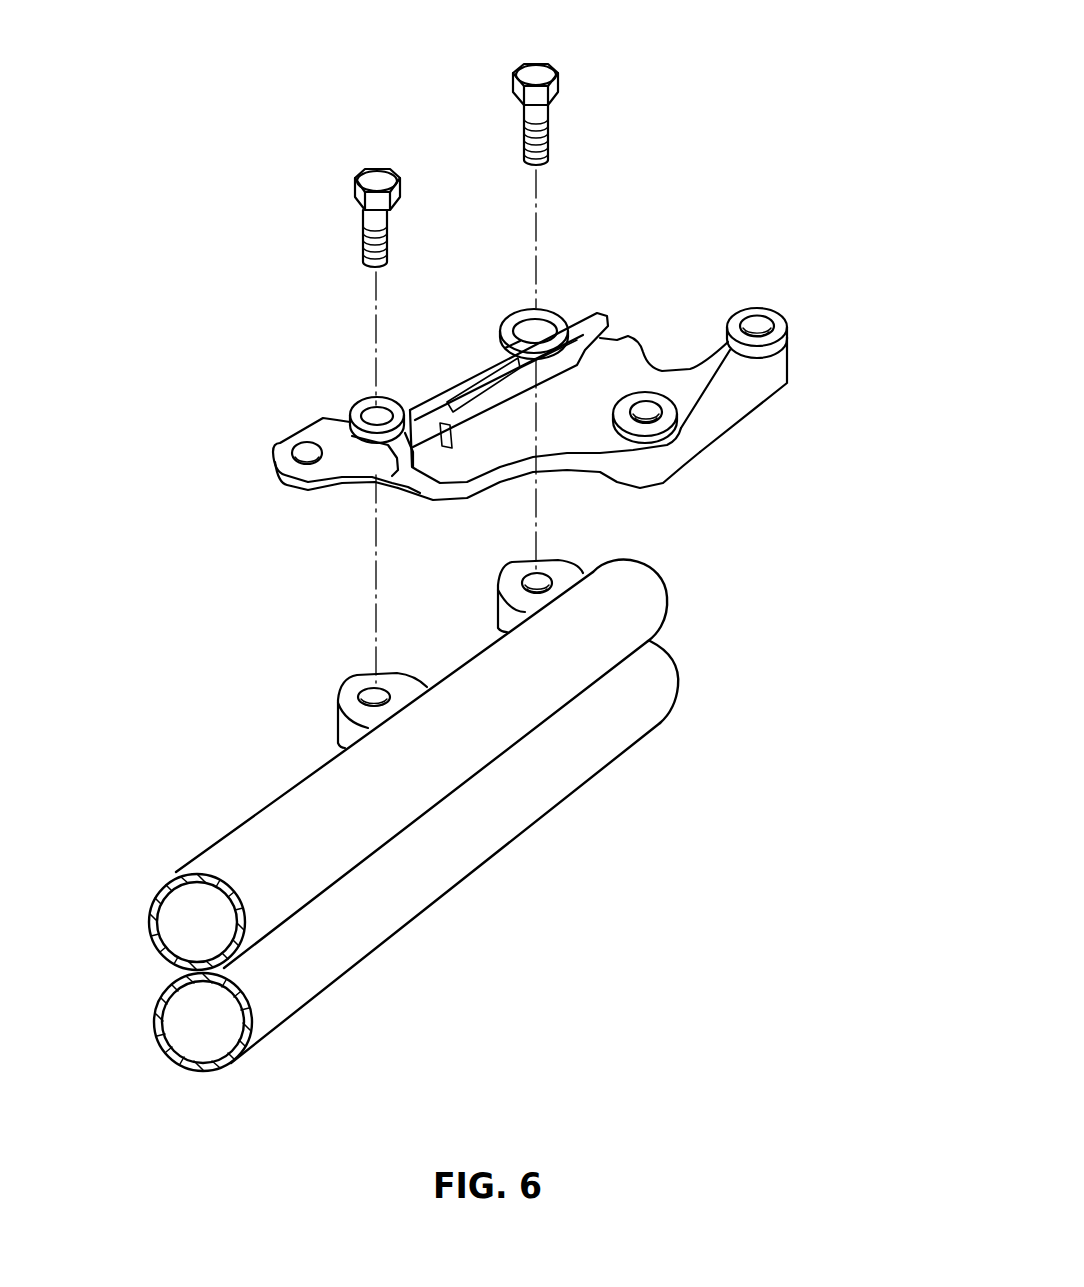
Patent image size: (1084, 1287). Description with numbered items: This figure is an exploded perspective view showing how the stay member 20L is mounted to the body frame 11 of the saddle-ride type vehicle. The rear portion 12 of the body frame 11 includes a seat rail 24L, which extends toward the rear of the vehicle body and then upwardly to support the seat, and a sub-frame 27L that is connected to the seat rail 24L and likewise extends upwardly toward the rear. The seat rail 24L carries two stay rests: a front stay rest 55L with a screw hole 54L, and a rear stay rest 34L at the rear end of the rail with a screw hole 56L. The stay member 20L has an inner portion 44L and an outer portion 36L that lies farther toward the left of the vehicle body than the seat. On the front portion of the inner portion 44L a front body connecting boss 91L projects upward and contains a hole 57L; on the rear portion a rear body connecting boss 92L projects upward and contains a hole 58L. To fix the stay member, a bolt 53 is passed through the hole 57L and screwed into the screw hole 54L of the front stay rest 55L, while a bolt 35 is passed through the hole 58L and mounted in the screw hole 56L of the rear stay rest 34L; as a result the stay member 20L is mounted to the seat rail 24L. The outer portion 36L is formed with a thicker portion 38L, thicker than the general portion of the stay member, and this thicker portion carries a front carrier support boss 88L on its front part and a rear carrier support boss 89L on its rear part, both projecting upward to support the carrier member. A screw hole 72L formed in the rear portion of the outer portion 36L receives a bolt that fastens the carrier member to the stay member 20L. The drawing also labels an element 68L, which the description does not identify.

The body frame 11 is at (172, 828).
The rear portion of the body frame 12 is at (243, 830).
The stay member 20L is at (528, 341).
The seat rail 24L is at (387, 815).
The sub-frame 27L is at (377, 927).
The rear stay rest 34L is at (507, 618).
The bolt 35 is at (540, 72).
The outer portion 36L is at (712, 392).
The thicker portion 38L is at (696, 388).
The inner portion 44L is at (456, 368).
The bolt 53 is at (372, 177).
The screw hole 54L is at (404, 731).
The front stay rest 55L is at (353, 732).
The screw hole 56L is at (645, 653).
The hole 57L is at (368, 393).
The hole 58L is at (538, 319).
The threaded hole 68L is at (633, 404).
The screw hole 72L is at (813, 289).
The front carrier support boss 88L is at (669, 482).
The rear carrier support boss 89L is at (778, 333).
The front body connecting boss 91L is at (345, 416).
The rear body connecting boss 92L is at (521, 314).